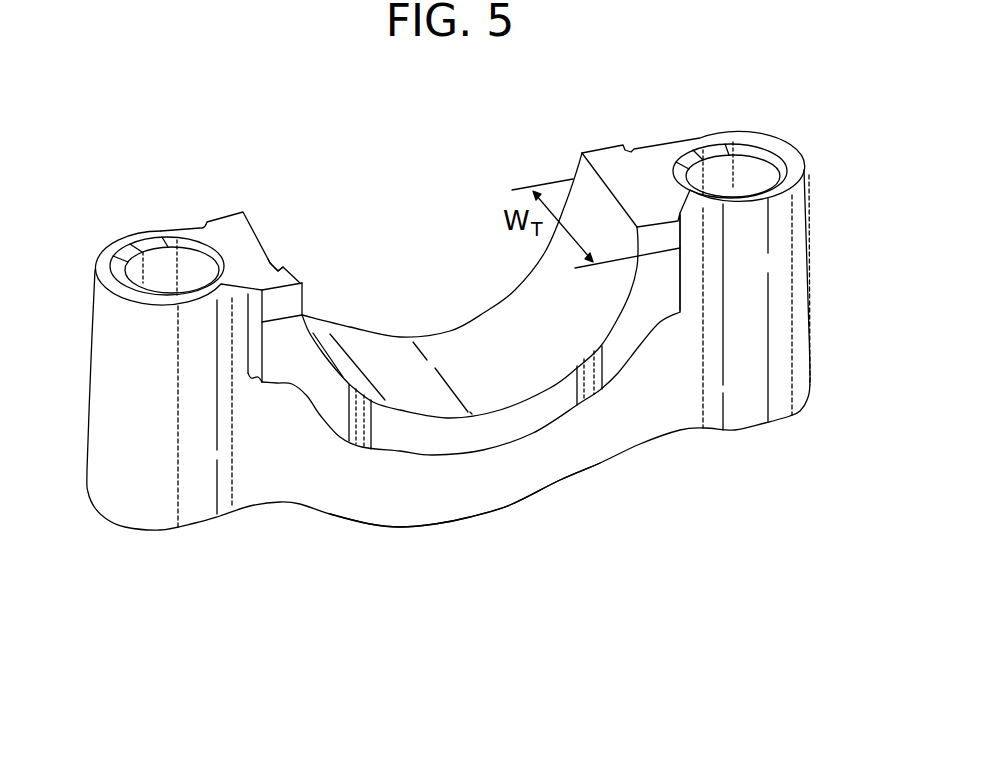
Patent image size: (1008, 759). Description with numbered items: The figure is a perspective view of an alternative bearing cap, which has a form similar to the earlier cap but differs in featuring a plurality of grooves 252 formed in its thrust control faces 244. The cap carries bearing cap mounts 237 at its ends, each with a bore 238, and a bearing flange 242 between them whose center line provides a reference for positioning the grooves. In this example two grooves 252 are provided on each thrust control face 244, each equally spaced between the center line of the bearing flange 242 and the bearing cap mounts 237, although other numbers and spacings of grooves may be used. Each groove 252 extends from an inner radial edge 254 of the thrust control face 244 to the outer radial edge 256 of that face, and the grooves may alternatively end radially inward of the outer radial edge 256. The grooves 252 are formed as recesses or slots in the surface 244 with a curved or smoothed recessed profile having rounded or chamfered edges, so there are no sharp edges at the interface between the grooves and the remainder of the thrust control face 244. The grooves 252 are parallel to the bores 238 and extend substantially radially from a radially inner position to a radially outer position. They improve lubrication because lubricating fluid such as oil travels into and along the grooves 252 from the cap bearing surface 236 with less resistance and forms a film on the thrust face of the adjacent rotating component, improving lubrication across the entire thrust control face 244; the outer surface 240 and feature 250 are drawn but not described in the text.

The cap bearing surface 236 is at (520, 343).
The bearing cap mount 237 is at (780, 248).
The bore 238 is at (158, 268).
The outer front surface of arcuate portion 240 is at (473, 488).
The bearing flange 242 is at (673, 293).
The thrust control face 244 is at (503, 428).
The notch 250 is at (280, 262).
The groove 252 is at (593, 370).
The inner radial edge 254 is at (415, 410).
The outer radial edge 256 is at (428, 457).